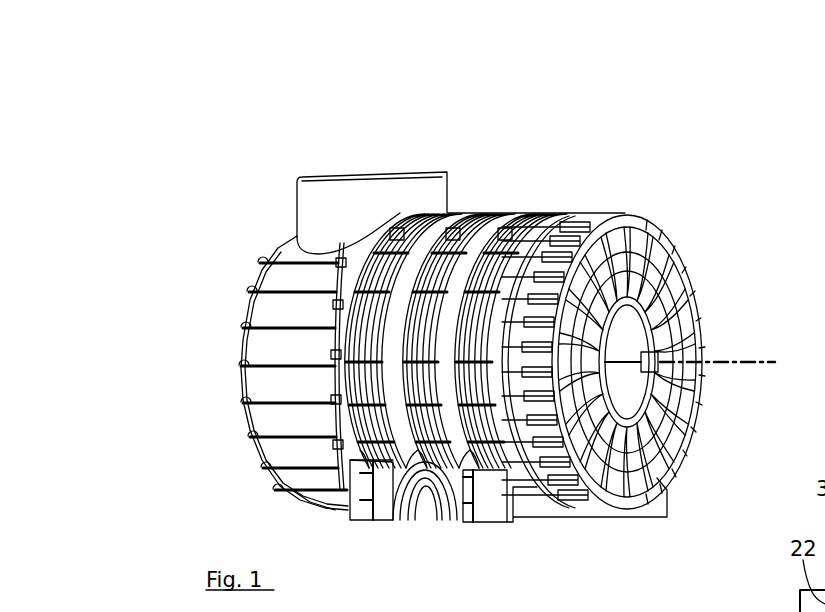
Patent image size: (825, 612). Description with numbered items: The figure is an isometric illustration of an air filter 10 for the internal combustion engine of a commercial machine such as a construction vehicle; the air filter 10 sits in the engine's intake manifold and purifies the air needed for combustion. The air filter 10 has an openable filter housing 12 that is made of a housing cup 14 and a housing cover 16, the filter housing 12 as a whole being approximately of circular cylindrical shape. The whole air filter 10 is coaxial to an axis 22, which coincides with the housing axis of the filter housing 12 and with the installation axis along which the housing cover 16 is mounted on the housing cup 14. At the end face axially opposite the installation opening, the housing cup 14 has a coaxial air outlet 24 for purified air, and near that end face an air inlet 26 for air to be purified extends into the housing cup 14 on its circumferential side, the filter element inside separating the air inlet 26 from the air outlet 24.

The air filter 10 is at (228, 183).
The filter housing 12 is at (279, 478).
The housing cup 14 is at (505, 213).
The housing cover 16 is at (655, 240).
The axis 22 is at (718, 360).
The air outlet 24 is at (245, 353).
The air inlet 26 is at (357, 197).